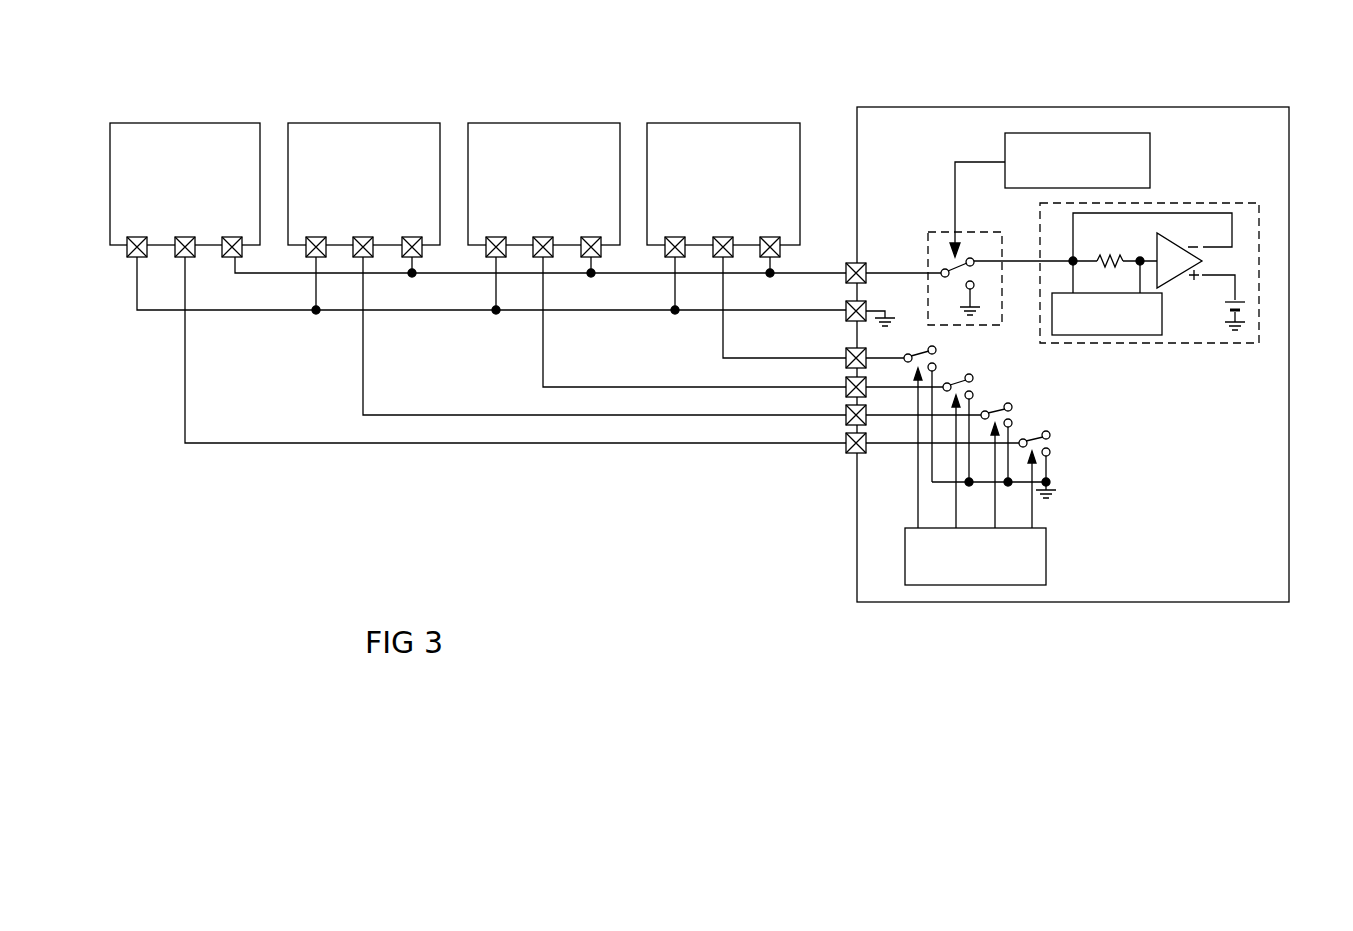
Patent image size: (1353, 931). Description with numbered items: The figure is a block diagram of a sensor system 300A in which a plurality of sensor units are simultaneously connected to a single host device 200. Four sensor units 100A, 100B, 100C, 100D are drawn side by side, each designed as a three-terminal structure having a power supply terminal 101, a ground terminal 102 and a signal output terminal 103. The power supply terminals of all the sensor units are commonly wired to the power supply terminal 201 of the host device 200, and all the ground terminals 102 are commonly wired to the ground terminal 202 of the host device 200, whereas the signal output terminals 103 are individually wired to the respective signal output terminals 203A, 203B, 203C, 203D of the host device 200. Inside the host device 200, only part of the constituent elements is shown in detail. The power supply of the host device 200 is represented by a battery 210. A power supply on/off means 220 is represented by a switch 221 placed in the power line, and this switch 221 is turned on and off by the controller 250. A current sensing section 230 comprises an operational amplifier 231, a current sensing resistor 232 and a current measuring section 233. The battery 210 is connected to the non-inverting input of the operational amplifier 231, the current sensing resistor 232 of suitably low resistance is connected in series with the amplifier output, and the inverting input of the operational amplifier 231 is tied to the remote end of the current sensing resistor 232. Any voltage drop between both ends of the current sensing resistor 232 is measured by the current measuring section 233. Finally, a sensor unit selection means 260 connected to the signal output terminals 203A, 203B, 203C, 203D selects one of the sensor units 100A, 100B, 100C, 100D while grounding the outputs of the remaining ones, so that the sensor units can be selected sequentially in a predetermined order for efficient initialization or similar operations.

The sensor unit 100A is at (135, 123).
The sensor unit 100B is at (308, 123).
The sensor unit 100C is at (490, 123).
The sensor unit 100D is at (670, 123).
The power supply terminal 101 is at (229, 257).
The ground terminal 102 is at (129, 257).
The signal output terminal 103 is at (182, 257).
The sensor system 300A is at (890, 102).
The host device 200 is at (1073, 340).
The power supply terminal 201 is at (838, 265).
The ground terminal 202 is at (853, 306).
The signal output terminal 203A is at (832, 439).
The signal output terminal 203B is at (832, 410).
The signal output terminal 203C is at (832, 382).
The signal output terminal 203D is at (831, 353).
The controller 250 is at (1168, 106).
The power supply on/off means 220 is at (951, 293).
The switch 221 is at (950, 268).
The current sensing section 230 is at (1160, 258).
The operational amplifier 231 is at (1185, 289).
The current sensing resistor 232 is at (1118, 254).
The current measuring section 233 is at (1105, 335).
The battery 210 is at (1248, 304).
The sensor unit selection means 260 is at (1066, 453).